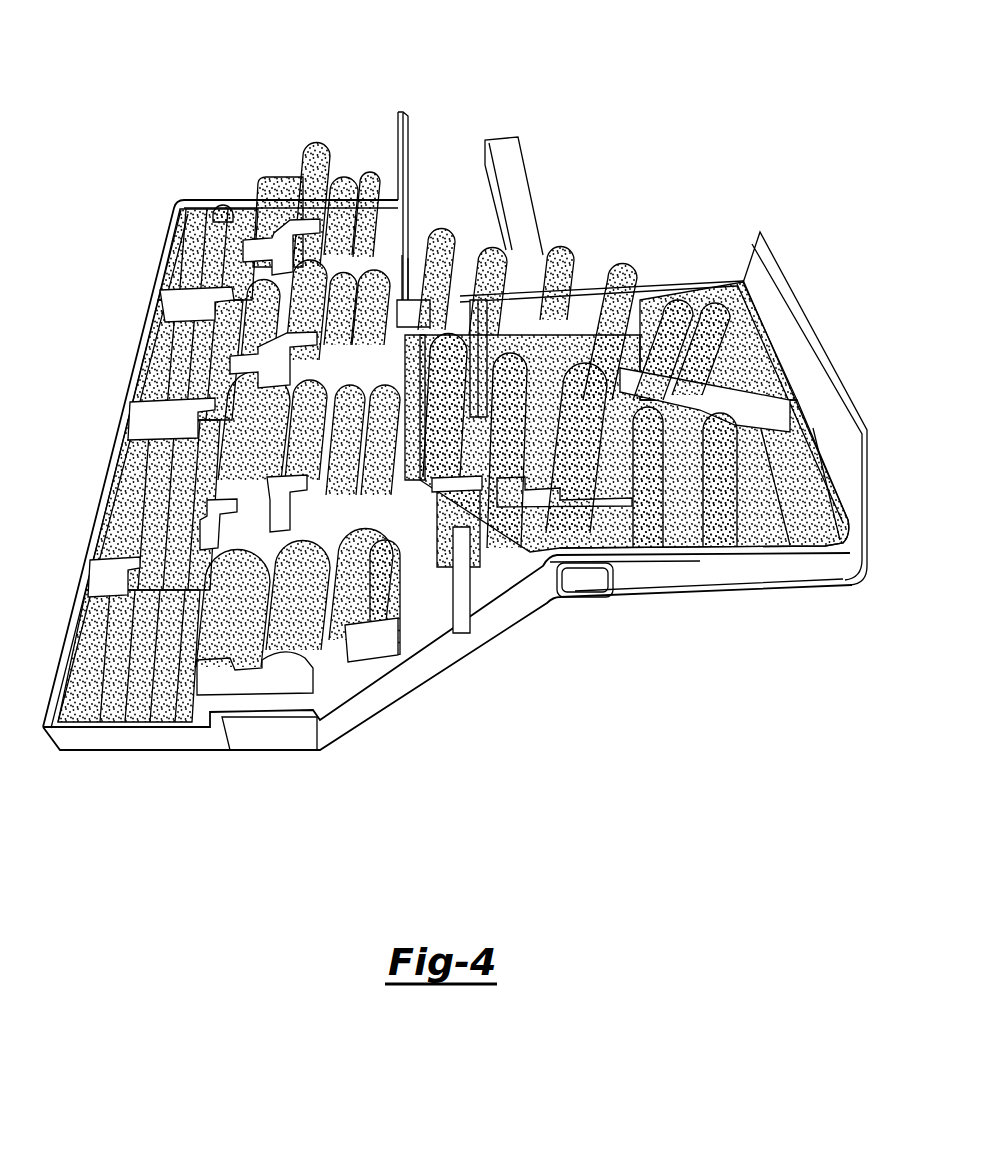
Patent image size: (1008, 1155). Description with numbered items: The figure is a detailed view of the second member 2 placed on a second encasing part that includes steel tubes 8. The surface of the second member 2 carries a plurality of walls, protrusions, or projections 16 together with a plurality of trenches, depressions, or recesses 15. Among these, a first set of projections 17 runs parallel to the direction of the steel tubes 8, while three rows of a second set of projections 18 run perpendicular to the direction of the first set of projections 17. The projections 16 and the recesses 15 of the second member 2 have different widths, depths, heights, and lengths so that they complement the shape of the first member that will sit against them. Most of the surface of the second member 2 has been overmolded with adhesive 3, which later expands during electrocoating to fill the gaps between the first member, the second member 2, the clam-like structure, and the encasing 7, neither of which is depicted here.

The second member 2 is at (451, 680).
The adhesive 3 is at (375, 634).
The encasing 7 is at (760, 272).
The tubes 8 is at (254, 735).
The trenches, depressions, or recesses 15 is at (701, 316).
The walls, protrusions, or projections 16 is at (620, 264).
The first set of projections 17 is at (224, 208).
The second set of projections 18 is at (287, 236).